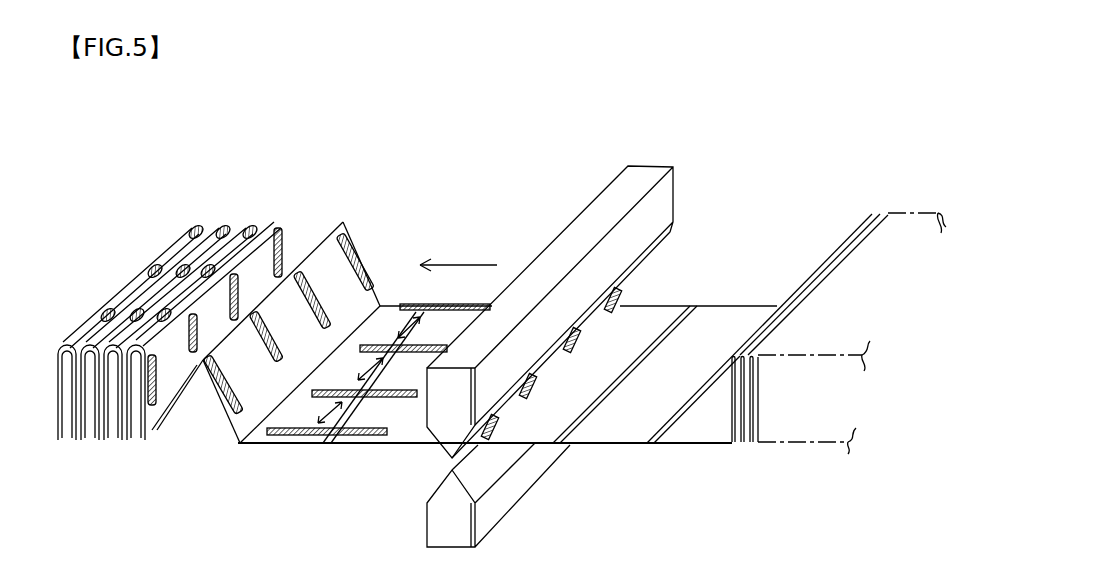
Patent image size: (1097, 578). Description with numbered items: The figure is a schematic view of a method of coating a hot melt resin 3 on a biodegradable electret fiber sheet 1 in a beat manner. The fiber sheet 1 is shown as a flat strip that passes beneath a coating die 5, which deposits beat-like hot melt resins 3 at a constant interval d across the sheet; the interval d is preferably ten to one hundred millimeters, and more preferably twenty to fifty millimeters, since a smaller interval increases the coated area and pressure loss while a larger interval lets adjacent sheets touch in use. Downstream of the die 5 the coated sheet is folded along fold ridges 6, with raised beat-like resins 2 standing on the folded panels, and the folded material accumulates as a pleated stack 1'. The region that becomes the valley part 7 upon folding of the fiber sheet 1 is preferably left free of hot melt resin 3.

The biodegradable electret fiber sheet 1 is at (592, 342).
The folded sheet stack 1' is at (187, 305).
The raised tabs 2 is at (280, 230).
The hot melt resin 3 is at (622, 292).
The forming die 5 is at (657, 213).
The fold ridge 6 is at (251, 228).
The valley part 7 is at (224, 460).
The interval d is at (363, 370).